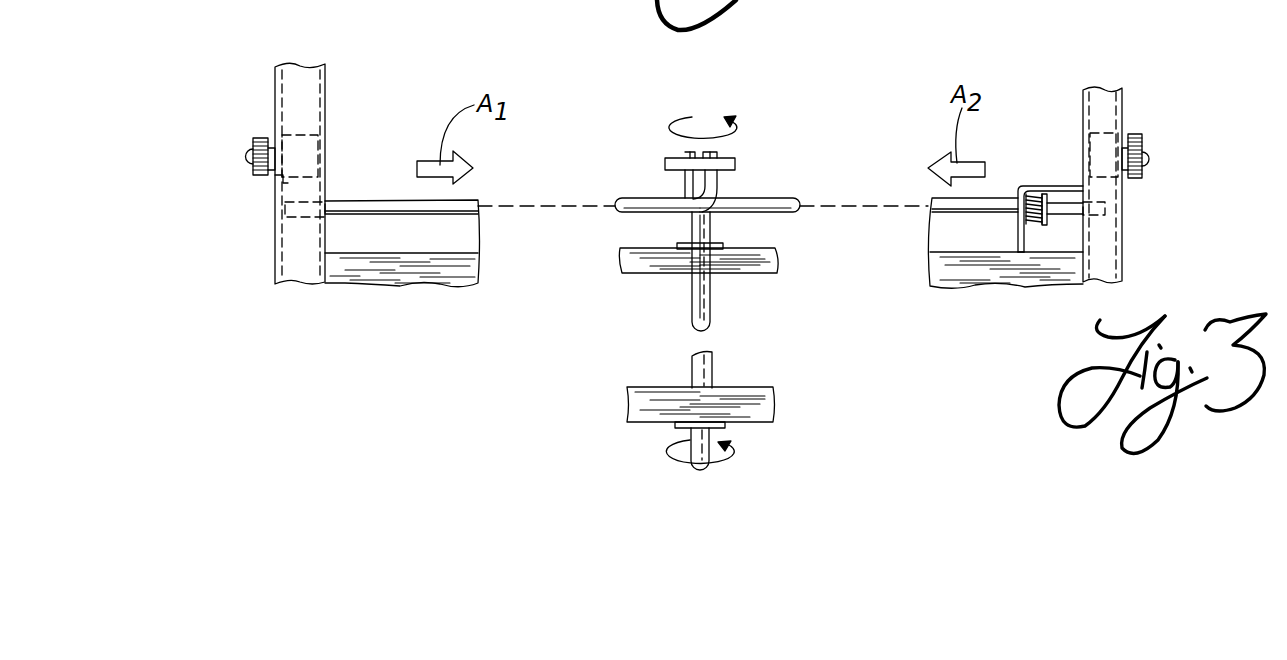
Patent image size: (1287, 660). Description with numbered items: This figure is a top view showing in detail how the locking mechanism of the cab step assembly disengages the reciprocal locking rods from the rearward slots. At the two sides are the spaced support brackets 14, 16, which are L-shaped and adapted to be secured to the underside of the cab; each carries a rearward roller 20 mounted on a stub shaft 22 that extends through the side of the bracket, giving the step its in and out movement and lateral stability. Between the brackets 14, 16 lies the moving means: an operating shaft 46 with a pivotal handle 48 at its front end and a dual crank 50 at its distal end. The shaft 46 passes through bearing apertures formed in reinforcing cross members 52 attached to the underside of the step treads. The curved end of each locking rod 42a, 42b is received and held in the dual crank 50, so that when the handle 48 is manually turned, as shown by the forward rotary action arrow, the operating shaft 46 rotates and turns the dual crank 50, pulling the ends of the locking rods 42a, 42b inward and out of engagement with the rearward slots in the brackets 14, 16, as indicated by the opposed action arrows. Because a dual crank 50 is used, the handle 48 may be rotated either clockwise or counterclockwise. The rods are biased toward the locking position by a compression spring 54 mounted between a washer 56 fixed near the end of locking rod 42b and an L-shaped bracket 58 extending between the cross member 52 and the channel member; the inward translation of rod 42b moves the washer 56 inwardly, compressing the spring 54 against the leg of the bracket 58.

The support bracket 14 is at (292, 72).
The support bracket 16 is at (1103, 98).
The rearward roller 20 is at (298, 160).
The stub shaft 22 is at (244, 157).
The locking rod 42a is at (615, 212).
The locking rod 42b is at (799, 212).
The operating shaft 46 is at (697, 312).
The pivotal handle 48 is at (695, 466).
The dual crank 50 is at (736, 163).
The reinforcing cross member 52 is at (757, 267).
The compression spring 54 is at (1040, 190).
The washer 56 is at (1047, 227).
The L-shaped bracket 58 is at (1018, 238).